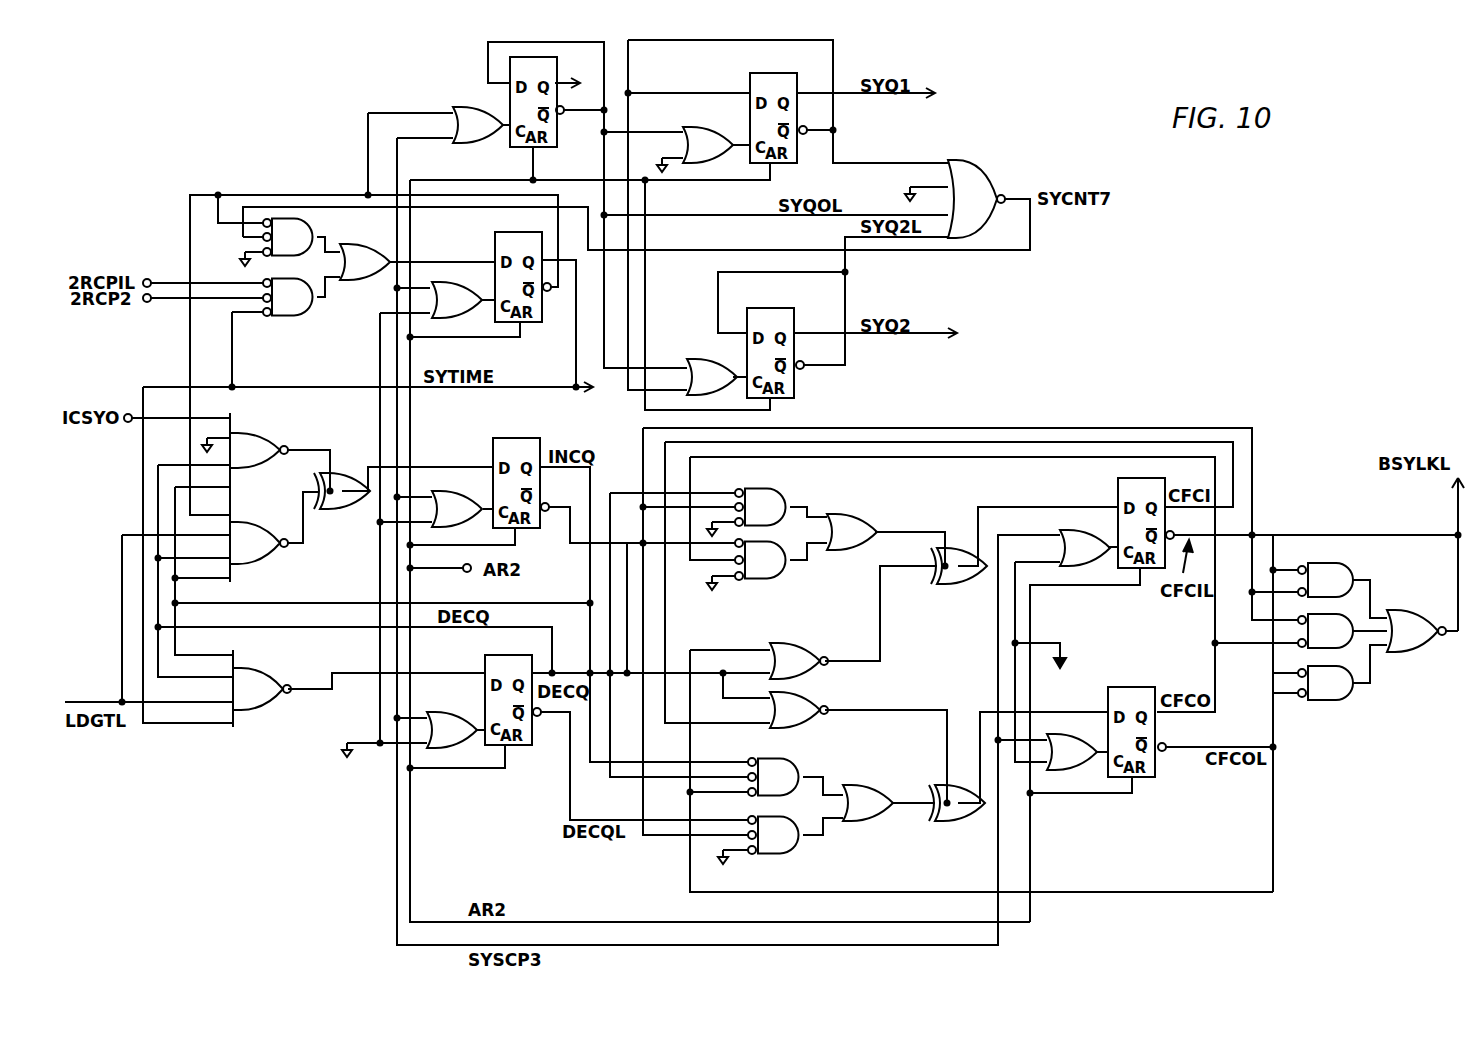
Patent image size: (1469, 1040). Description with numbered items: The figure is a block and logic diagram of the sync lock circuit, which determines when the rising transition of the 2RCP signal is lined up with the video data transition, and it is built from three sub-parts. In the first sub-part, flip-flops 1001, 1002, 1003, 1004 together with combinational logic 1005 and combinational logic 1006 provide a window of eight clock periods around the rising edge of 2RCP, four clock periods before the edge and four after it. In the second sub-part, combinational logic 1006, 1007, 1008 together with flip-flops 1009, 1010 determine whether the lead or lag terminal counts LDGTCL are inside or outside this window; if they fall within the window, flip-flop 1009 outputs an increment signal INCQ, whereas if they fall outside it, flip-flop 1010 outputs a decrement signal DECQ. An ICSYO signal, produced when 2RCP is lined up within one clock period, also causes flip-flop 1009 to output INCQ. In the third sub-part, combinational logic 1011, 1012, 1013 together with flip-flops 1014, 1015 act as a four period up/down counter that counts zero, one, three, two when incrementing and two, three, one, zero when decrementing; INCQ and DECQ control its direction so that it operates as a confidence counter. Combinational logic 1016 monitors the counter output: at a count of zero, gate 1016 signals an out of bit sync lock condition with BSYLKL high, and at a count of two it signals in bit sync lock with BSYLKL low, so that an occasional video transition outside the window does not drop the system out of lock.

The flip-flop 1001 is at (507, 102).
The flip-flop 1002 is at (530, 323).
The flip-flop 1003 is at (762, 73).
The flip-flop 1004 is at (767, 308).
The combinational logic 1005 is at (322, 310).
The combinational logic 1006 is at (972, 177).
The combinational logic 1007 is at (258, 557).
The combinational logic 1008 is at (260, 710).
The flip-flop 1009 is at (517, 437).
The flip-flop 1010 is at (513, 748).
The combinational logic 1011 is at (820, 494).
The combinational logic 1012 is at (823, 687).
The combinational logic 1013 is at (833, 840).
The flip-flop 1014 is at (1118, 488).
The flip-flop 1015 is at (1147, 777).
The combinational logic 1016 is at (1392, 700).